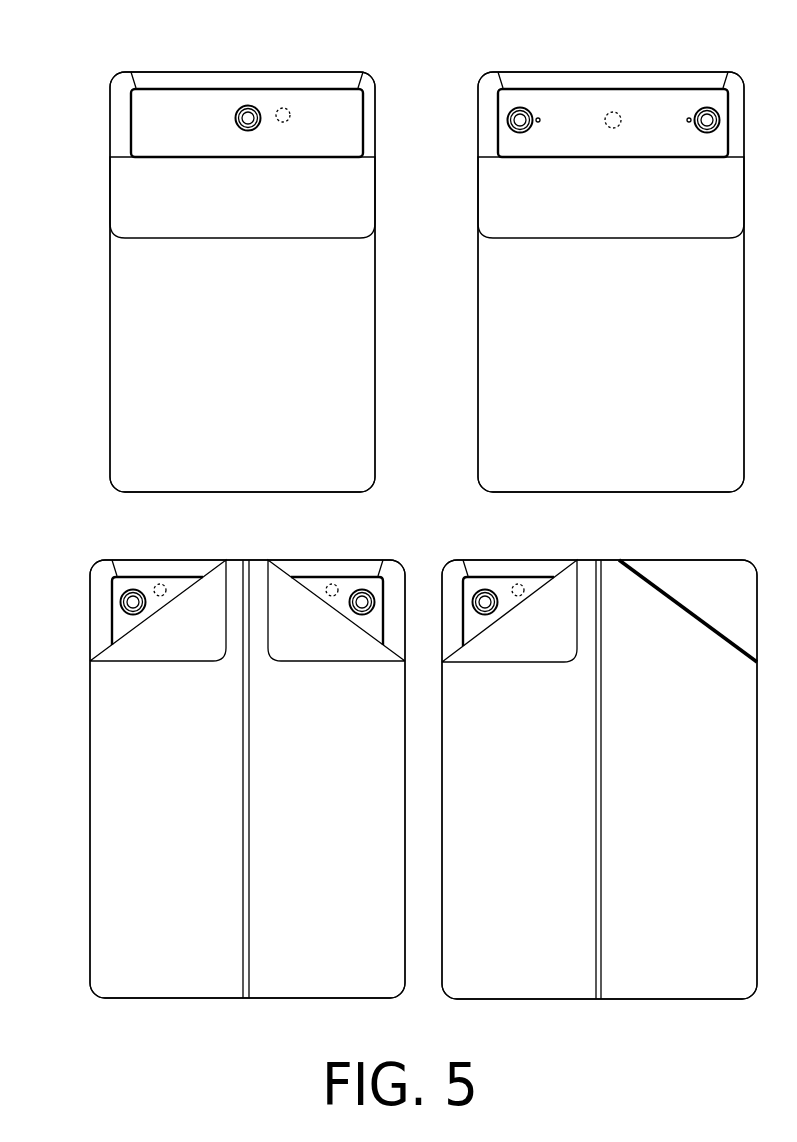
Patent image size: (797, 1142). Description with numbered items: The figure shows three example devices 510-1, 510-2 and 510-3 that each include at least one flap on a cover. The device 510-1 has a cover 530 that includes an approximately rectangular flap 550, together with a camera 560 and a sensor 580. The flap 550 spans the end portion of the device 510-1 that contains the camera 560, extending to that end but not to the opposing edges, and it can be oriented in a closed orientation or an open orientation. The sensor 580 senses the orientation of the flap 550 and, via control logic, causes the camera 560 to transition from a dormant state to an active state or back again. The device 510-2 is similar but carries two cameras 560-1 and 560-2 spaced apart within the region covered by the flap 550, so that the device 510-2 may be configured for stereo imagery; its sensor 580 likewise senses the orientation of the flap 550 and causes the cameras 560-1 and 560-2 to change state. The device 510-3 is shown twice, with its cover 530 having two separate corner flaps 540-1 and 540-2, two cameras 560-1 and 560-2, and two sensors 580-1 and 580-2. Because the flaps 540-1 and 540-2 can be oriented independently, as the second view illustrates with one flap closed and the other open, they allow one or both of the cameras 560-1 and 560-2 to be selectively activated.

The device 510-1 is at (147, 42).
The device 510-2 is at (500, 42).
The device 510-3 is at (127, 539).
The cover 530 is at (258, 335).
The flap 550 is at (258, 215).
The camera 560 is at (229, 121).
The first camera 560-1 is at (526, 137).
The second camera 560-2 is at (702, 137).
The sensor 580 is at (291, 95).
The first sensor 580-1 is at (158, 567).
The second sensor 580-2 is at (338, 570).
The first flap 540-1 is at (202, 648).
The second flap 540-2 is at (336, 648).